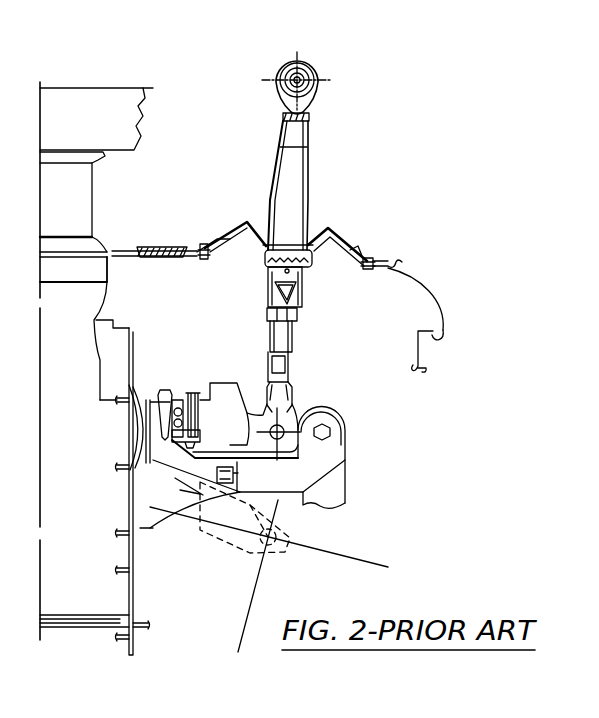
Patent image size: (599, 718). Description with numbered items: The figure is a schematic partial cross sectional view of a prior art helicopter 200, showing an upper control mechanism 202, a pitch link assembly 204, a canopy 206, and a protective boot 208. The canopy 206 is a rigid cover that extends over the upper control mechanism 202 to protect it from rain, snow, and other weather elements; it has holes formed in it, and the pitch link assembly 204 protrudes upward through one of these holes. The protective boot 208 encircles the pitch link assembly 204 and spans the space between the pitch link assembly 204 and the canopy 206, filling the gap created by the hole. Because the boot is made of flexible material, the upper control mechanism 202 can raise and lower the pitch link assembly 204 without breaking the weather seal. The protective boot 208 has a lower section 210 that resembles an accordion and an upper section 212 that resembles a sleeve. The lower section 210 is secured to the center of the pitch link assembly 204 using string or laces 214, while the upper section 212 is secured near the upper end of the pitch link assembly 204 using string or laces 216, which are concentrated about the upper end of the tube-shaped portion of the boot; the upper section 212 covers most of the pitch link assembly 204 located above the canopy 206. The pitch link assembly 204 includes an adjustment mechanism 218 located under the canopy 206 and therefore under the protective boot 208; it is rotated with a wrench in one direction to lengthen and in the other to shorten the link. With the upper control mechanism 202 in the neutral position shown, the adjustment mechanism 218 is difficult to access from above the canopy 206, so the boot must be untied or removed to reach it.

The prior art helicopter 200 is at (111, 344).
The upper control mechanism 202 is at (321, 525).
The pitch link assembly 204 is at (252, 297).
The canopy 206 is at (162, 247).
The protective boot 208 is at (332, 230).
The lower section 210 is at (233, 238).
The upper section 212 is at (280, 137).
The string or laces 214 is at (307, 252).
The string or laces 216 is at (307, 118).
The adjustment mechanism 218 is at (300, 290).